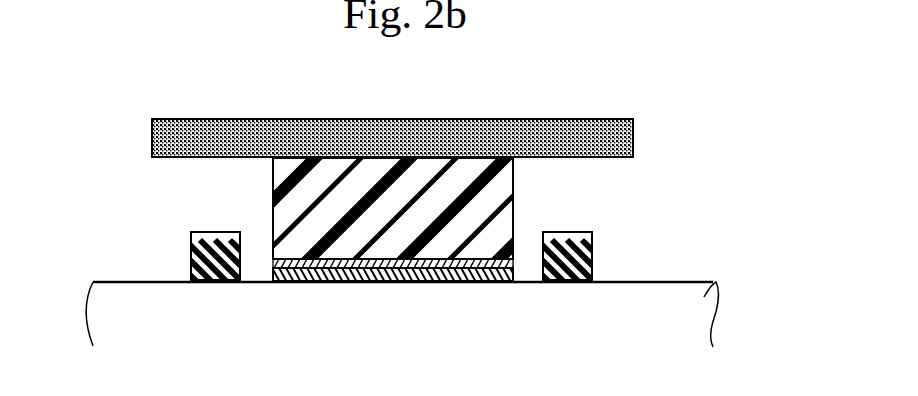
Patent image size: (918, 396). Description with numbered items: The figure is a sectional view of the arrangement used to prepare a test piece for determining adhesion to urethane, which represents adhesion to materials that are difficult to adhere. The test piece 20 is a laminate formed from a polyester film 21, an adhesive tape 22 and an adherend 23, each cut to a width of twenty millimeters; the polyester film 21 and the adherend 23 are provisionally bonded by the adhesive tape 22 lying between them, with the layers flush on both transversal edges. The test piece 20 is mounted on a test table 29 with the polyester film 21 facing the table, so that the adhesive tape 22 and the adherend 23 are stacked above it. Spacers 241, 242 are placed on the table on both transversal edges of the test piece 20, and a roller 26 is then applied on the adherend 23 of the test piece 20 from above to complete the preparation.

The test piece 20 is at (465, 150).
The polyester film 21 is at (516, 280).
The adhesive tape 22 is at (515, 263).
The adherend 23 is at (515, 165).
The roller 26 is at (610, 133).
The test table 29 is at (713, 282).
The spacer 241 is at (191, 262).
The spacer 242 is at (592, 267).